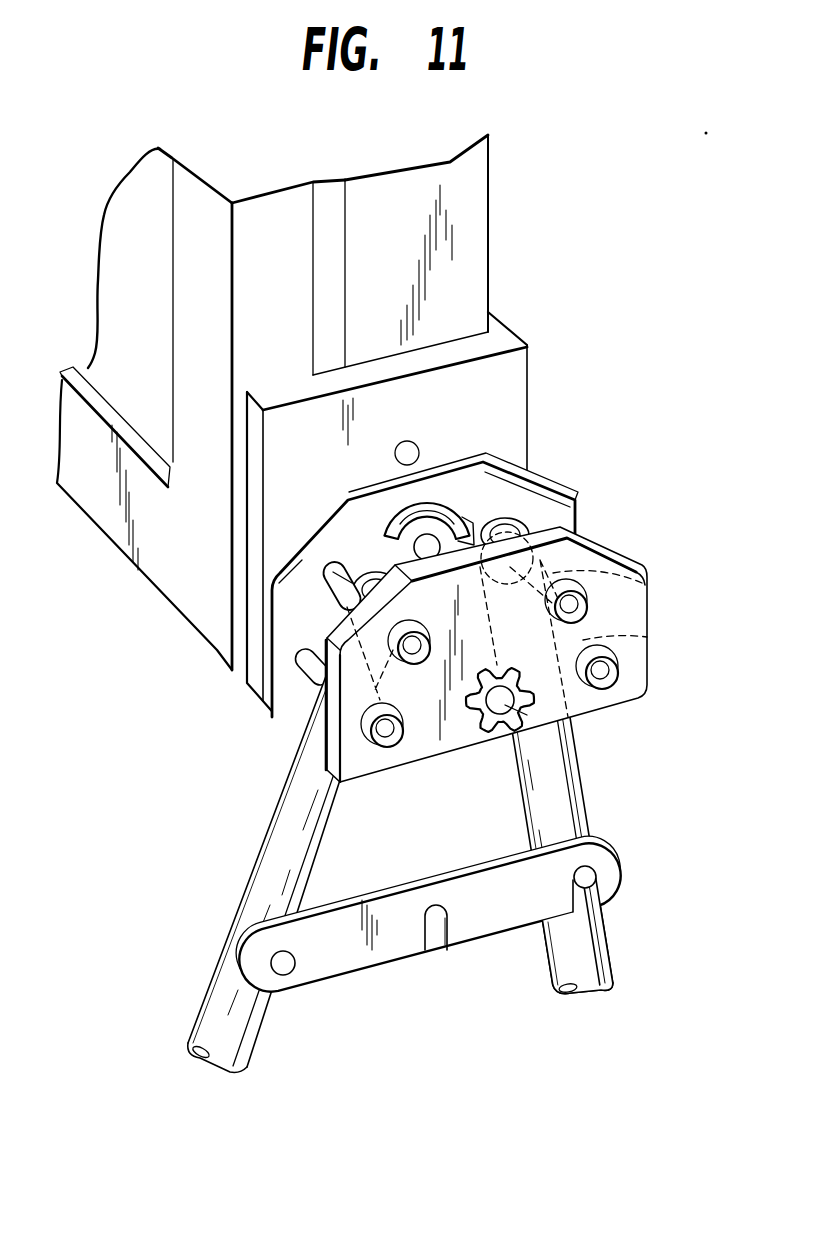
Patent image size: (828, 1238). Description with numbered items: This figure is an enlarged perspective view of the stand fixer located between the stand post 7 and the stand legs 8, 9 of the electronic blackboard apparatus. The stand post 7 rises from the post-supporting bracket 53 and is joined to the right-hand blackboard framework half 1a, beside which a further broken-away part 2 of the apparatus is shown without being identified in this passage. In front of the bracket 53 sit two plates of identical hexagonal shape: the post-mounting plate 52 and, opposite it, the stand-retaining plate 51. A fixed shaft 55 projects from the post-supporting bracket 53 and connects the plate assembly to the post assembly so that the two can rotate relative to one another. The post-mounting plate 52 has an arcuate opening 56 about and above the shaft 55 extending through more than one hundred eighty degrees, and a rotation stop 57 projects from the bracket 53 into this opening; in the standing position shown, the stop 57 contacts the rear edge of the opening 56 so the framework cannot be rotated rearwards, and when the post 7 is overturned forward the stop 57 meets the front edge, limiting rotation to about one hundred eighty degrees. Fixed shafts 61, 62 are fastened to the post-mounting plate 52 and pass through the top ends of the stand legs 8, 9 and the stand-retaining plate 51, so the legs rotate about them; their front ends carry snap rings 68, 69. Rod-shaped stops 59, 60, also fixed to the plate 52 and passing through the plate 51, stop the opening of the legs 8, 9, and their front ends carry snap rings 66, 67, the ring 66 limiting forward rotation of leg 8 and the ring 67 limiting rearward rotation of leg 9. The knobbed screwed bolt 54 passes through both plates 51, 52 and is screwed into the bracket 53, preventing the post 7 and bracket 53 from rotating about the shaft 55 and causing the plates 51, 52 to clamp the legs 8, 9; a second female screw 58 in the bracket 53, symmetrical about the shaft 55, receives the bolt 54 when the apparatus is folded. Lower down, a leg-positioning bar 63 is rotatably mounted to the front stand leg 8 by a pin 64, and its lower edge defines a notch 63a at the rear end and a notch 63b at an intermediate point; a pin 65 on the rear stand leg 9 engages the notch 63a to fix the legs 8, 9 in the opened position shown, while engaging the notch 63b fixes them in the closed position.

The right-hand blackboard framework half 1a is at (263, 210).
The body panel 2 is at (120, 223).
The stand post 7 is at (478, 167).
The front stand leg 8 is at (273, 845).
The rear stand leg 9 is at (573, 805).
The stand-retaining plate 51 is at (577, 553).
The post-mounting plate 52 is at (505, 490).
The post-supporting bracket 53 is at (515, 378).
The knobbed screwed bolt 54 is at (567, 727).
The fixed shaft 55 is at (433, 540).
The arcuate opening 56 is at (383, 540).
The rotation stop 57 is at (464, 528).
The female screw 58 is at (400, 444).
The rod-shaped stop 59 is at (317, 682).
The rod-shaped stop 60 is at (650, 639).
The fixed shaft 61 is at (331, 587).
The fixed shaft 62 is at (648, 585).
The leg-positioning bar 63 is at (498, 917).
The notch 63a is at (605, 887).
The notch 63b is at (432, 950).
The pin 64 is at (283, 972).
The pin 65 is at (603, 903).
The snap ring 66 is at (369, 757).
The snap ring 67 is at (620, 662).
The snap ring 68 is at (394, 651).
The snap ring 69 is at (590, 596).